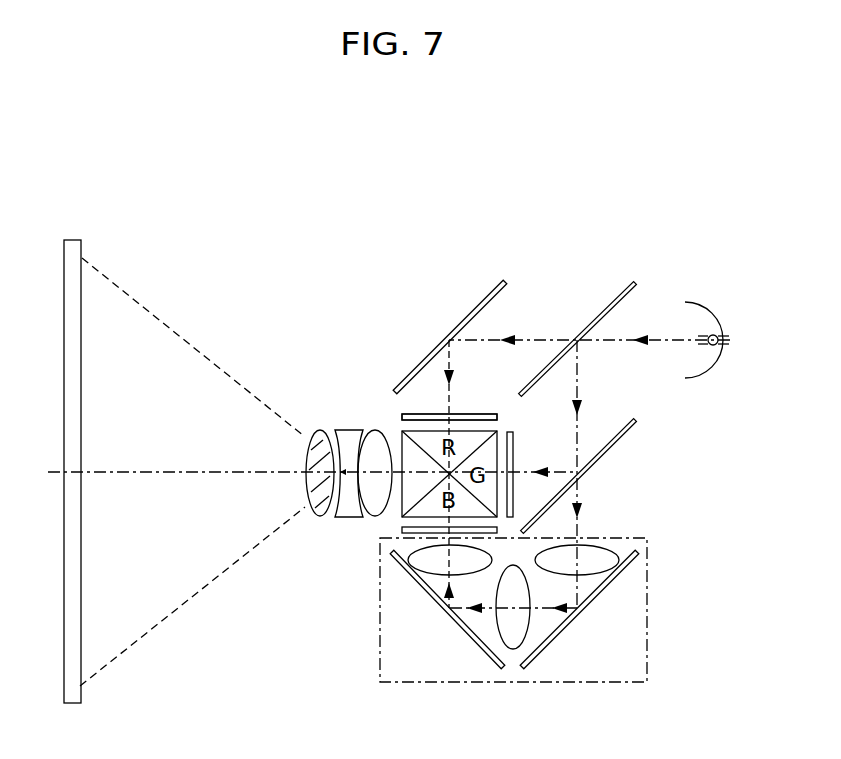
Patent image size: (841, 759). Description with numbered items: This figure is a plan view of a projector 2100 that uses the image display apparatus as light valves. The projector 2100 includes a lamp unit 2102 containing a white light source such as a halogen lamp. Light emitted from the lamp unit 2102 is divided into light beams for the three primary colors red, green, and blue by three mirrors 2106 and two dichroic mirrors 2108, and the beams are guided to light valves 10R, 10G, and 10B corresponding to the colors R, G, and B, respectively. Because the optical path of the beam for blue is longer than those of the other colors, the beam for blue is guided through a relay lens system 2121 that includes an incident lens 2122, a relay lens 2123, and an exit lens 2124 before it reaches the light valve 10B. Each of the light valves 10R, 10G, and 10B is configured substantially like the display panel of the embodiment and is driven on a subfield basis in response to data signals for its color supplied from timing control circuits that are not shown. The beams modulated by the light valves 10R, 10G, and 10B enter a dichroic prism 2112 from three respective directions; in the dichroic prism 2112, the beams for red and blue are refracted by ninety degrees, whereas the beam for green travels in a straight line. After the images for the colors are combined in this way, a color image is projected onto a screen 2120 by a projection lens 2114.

The projector 2100 is at (612, 212).
The lamp unit 2102 is at (714, 334).
The mirror 2106 is at (480, 303).
The dichroic mirror 2108 is at (607, 305).
The dichroic prism 2112 is at (412, 413).
The light valve 10R is at (413, 368).
The light valve 10G is at (513, 453).
The light valve 10B is at (402, 530).
The projection lens 2114 is at (392, 417).
The screen 2120 is at (81, 696).
The relay lens system 2121 is at (542, 609).
The incident lens 2122 is at (597, 570).
The relay lens 2123 is at (523, 637).
The exit lens 2124 is at (428, 565).